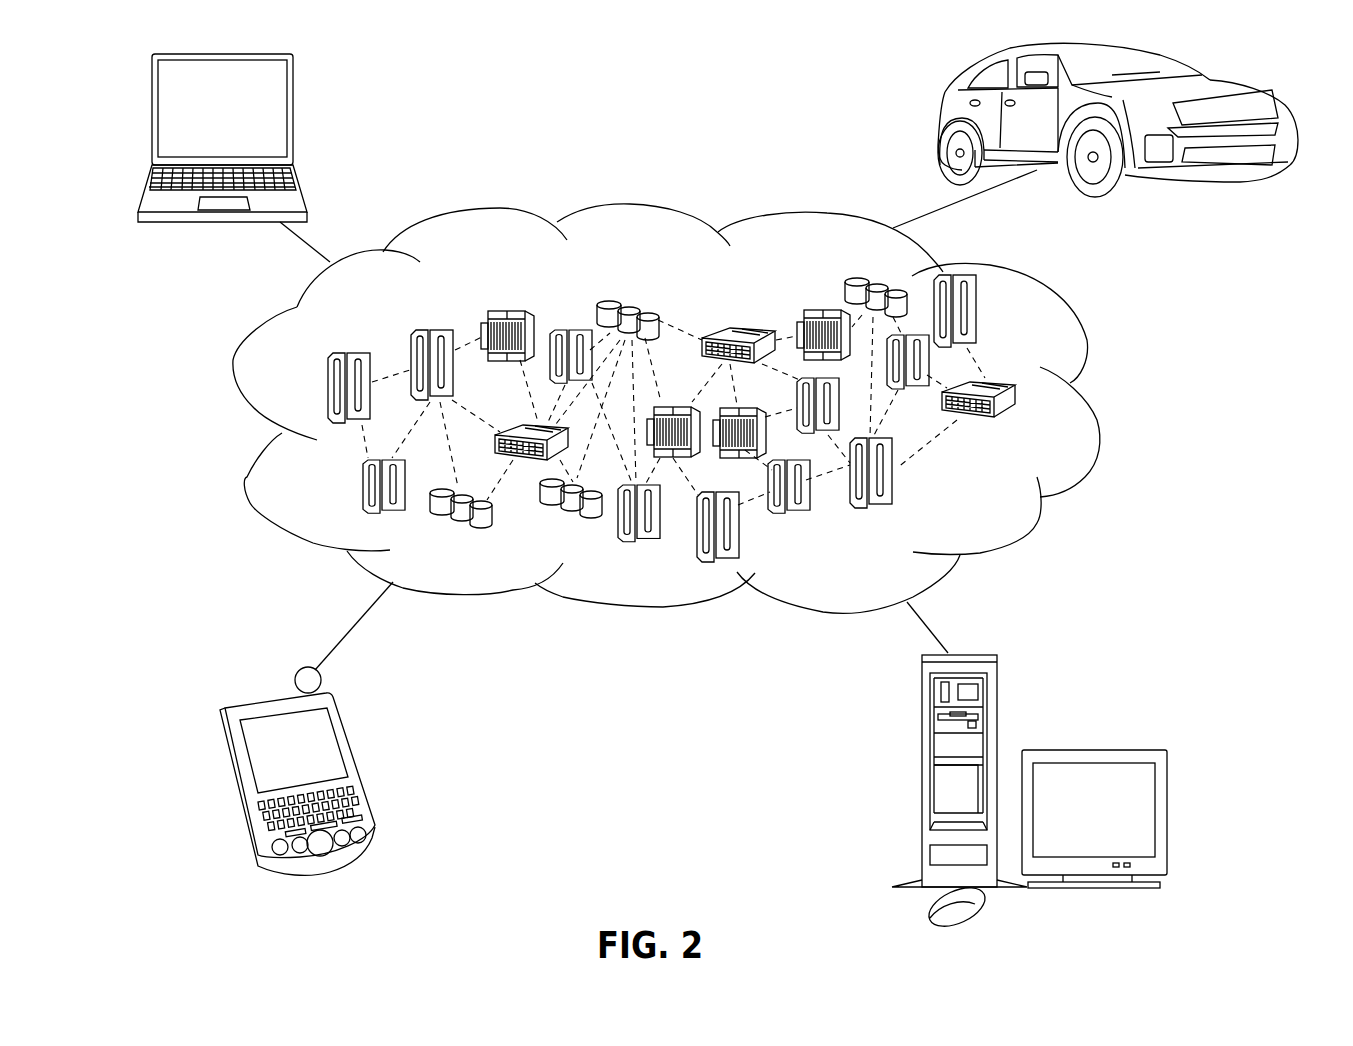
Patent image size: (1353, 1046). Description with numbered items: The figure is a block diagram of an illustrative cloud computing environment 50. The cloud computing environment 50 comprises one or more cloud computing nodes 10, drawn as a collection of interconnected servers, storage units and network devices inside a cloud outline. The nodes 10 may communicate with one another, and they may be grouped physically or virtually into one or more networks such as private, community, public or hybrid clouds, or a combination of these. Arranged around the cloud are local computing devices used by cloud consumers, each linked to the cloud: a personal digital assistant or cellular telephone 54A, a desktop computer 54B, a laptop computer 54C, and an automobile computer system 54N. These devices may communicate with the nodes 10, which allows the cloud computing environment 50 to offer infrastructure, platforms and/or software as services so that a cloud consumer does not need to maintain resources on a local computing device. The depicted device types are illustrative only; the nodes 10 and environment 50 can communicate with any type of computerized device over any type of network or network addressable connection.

The cloud computing nodes 10 is at (996, 503).
The cloud computing environment 50 is at (1090, 400).
The personal digital assistant (PDA) or cellular telephone 54A is at (347, 732).
The desktop computer 54B is at (922, 715).
The laptop computer 54C is at (293, 92).
The automobile computer system 54N is at (937, 108).